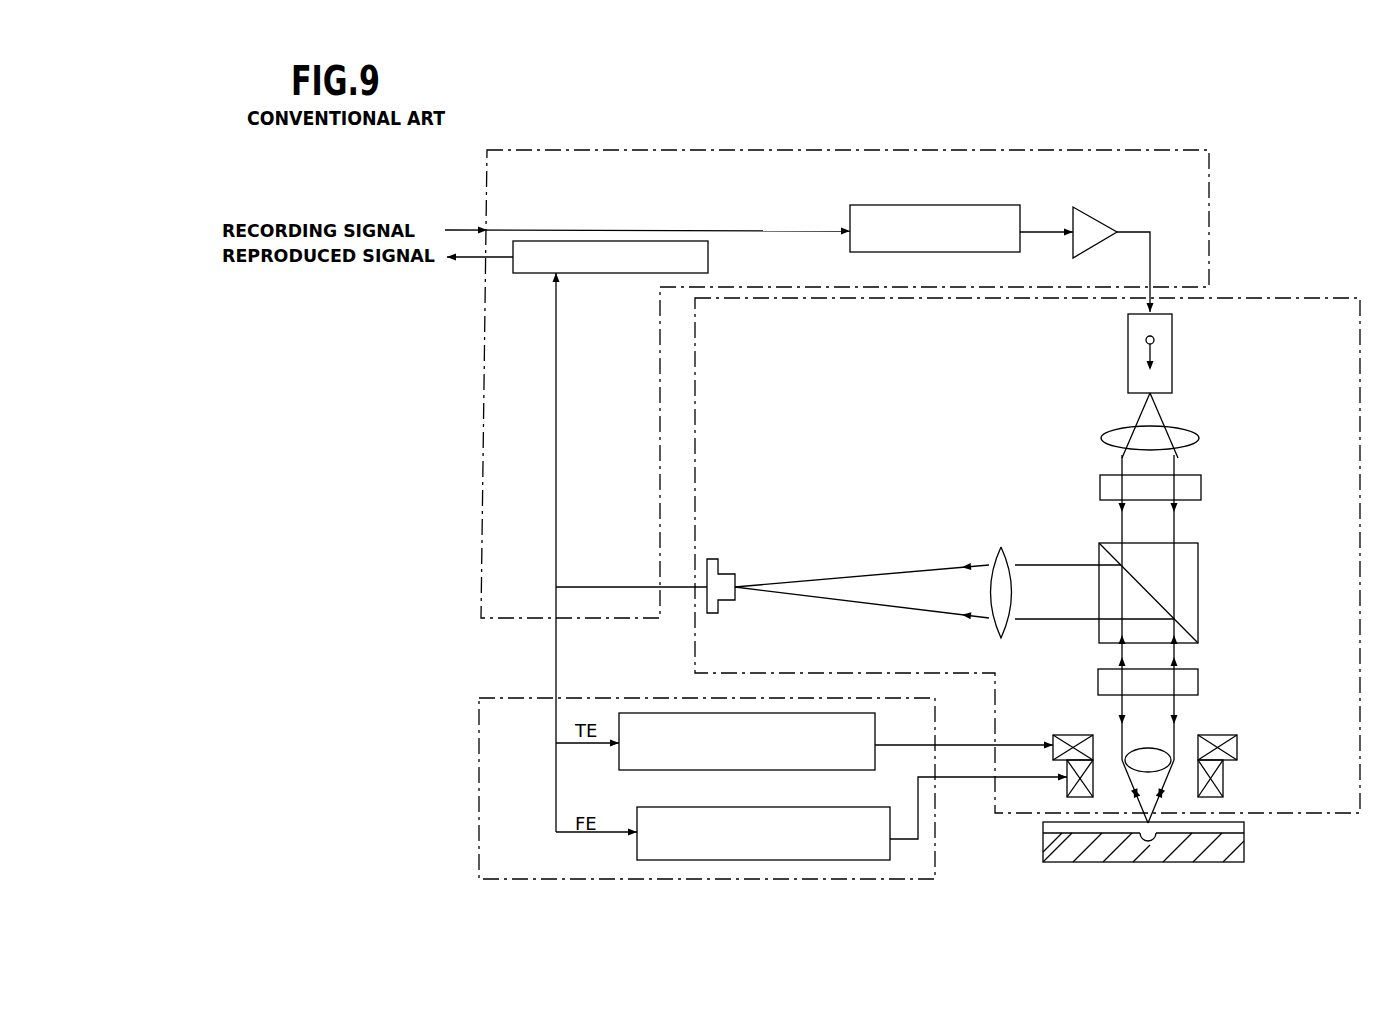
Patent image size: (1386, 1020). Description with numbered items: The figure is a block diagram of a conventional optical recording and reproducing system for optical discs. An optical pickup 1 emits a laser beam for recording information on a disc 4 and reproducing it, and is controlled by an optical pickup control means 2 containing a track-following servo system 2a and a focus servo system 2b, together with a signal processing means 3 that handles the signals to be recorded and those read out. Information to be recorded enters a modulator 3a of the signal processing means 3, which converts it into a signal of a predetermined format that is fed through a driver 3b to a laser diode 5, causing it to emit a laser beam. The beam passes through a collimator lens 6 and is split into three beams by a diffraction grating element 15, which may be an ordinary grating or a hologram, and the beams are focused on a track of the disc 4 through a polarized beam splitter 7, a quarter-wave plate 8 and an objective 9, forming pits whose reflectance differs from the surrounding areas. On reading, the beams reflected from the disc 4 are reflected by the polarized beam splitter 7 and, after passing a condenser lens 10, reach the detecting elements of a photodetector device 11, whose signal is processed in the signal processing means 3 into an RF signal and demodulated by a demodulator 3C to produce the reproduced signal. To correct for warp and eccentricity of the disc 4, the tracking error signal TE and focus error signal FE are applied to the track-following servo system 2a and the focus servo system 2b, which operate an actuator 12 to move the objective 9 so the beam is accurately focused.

The optical pickup 1 is at (1262, 298).
The optical pickup control means 2 is at (487, 798).
The track-following servo system 2a is at (878, 738).
The focus servo system 2b is at (818, 807).
The signal processing means 3 is at (813, 150).
The modulator 3a is at (920, 205).
The driver 3b is at (1103, 224).
The demodulator 3C is at (607, 273).
The disc 4 is at (1205, 862).
The laser diode 5 is at (1173, 347).
The collimator lens 6 is at (1190, 432).
The polarized beam splitter 7 is at (1198, 578).
The quarter-wave plate 8 is at (1198, 688).
The objective 9 is at (1124, 755).
The condenser lens 10 is at (995, 553).
The photodetector device 11 is at (728, 602).
The actuator 12 is at (1237, 748).
The diffraction grating element 15 is at (1201, 487).